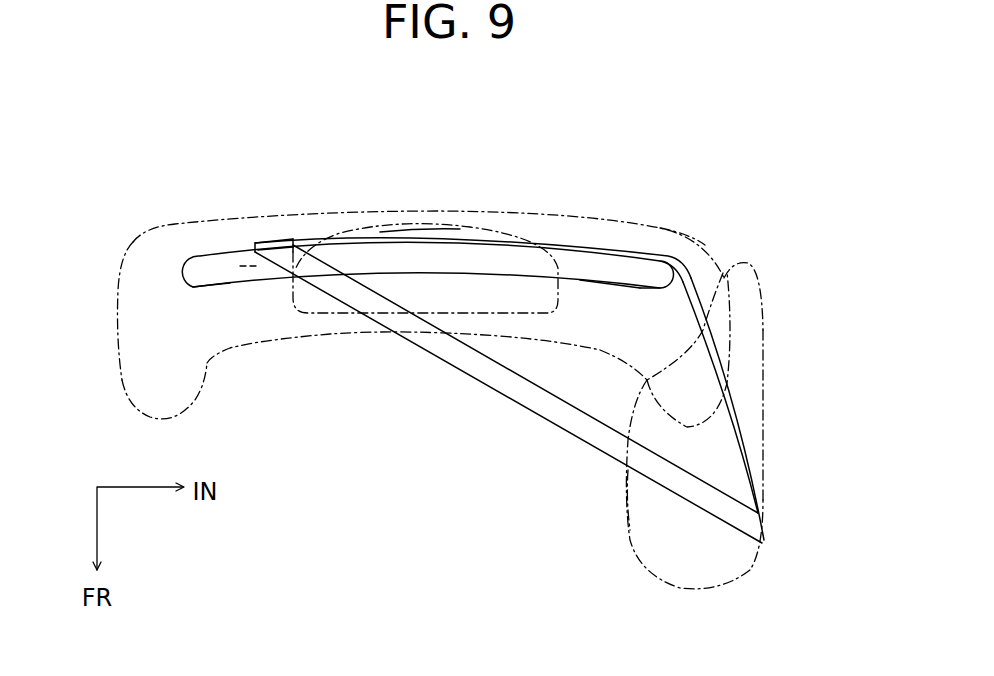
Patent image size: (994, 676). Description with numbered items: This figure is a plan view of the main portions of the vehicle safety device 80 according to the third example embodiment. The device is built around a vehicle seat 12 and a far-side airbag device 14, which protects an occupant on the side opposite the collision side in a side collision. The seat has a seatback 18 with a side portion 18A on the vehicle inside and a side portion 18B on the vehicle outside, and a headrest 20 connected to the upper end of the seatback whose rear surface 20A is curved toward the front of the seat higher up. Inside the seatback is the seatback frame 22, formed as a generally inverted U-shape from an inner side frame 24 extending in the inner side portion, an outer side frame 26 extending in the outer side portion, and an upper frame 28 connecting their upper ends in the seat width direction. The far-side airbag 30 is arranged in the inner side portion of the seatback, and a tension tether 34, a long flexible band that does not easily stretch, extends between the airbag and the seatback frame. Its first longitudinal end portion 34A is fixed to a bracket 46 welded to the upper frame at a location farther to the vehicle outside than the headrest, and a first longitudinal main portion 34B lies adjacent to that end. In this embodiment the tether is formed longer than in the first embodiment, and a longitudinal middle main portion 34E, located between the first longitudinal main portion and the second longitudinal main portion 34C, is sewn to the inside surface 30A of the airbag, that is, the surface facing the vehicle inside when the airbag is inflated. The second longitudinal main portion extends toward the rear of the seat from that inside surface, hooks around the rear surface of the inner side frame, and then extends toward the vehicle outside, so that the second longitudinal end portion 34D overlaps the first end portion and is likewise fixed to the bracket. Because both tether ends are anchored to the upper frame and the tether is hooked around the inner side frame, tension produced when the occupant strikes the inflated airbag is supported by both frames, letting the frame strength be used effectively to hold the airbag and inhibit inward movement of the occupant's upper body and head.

The vehicle seat 12 is at (120, 262).
The far-side airbag device 14 is at (598, 498).
The seatback 18 is at (260, 345).
The side portion on the inside of the seatback 18A is at (733, 321).
The side portion on the outside of the seatback 18B is at (117, 320).
The headrest 20 is at (453, 228).
The rear surface of the headrest 20A is at (397, 223).
The seatback frame 22 is at (610, 291).
The inner side frame 24 is at (651, 290).
The outer side frame 26 is at (183, 290).
The upper frame 28 is at (395, 315).
The far-side airbag 30 is at (627, 545).
The inside surface of the airbag 30A is at (763, 383).
The tension tether 34 is at (450, 366).
The first longitudinal end portion 34A is at (258, 243).
The first longitudinal main portion 34B is at (483, 385).
The second longitudinal main portion 34C is at (588, 245).
The second longitudinal end portion 34D is at (293, 240).
The longitudinal middle main portion 34E is at (747, 427).
The bracket 46 is at (250, 267).
The vehicle safety device 80 is at (703, 160).